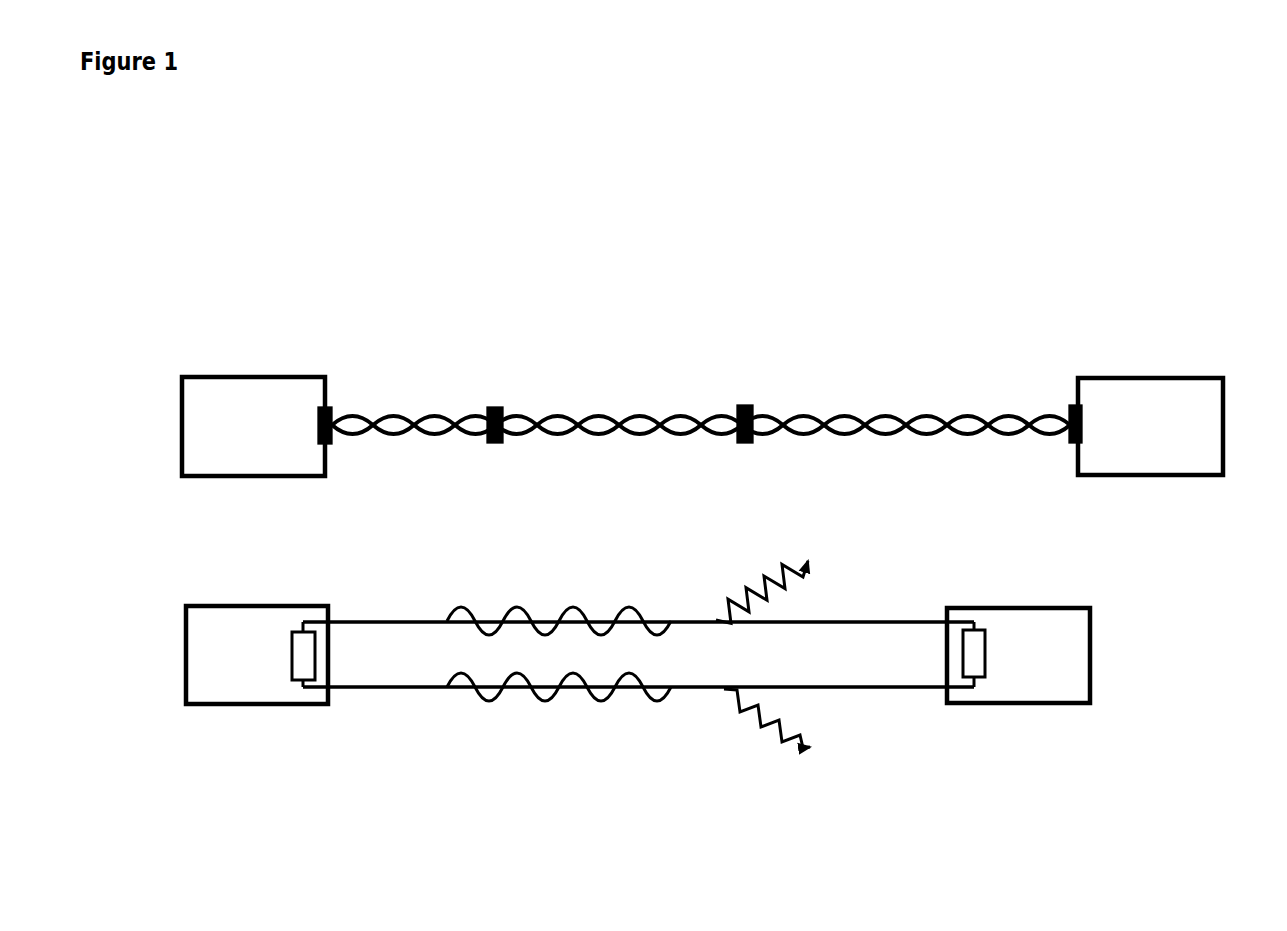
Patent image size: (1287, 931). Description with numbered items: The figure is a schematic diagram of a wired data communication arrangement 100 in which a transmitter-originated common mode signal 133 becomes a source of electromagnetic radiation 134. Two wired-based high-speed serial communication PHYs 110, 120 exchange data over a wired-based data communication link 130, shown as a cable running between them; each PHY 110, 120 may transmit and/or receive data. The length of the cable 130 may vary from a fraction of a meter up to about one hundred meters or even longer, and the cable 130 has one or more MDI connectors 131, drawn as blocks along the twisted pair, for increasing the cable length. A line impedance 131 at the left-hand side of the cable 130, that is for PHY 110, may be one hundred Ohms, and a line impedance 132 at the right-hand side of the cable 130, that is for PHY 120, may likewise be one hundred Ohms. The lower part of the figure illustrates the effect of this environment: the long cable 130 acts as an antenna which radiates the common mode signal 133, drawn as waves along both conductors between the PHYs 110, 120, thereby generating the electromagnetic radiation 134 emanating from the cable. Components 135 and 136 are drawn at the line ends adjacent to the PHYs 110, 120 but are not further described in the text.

The communication system 100 is at (336, 114).
The PHY 110 is at (263, 400).
The PHY 120 is at (1162, 402).
The wired data communication link 130 is at (692, 481).
The MDI connector 131 is at (1074, 409).
The line impedance 132 is at (334, 441).
The common mode signal 133 is at (551, 724).
The electromagnetic radiation 134 is at (775, 766).
The first termination resistor 135 is at (321, 655).
The second termination resistor 136 is at (958, 655).